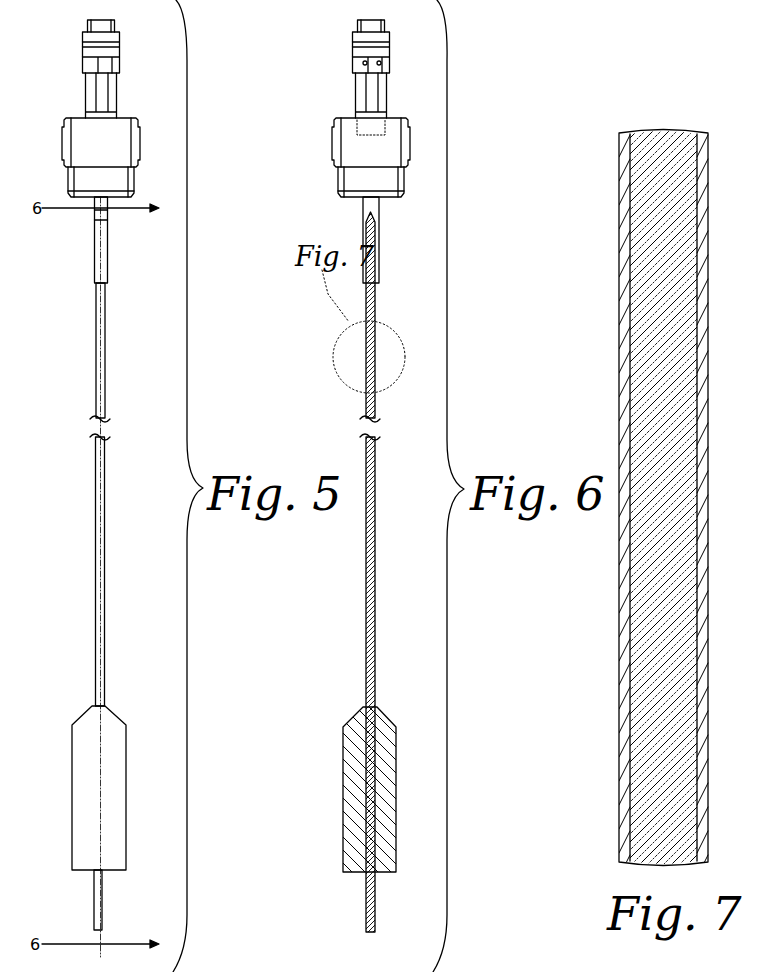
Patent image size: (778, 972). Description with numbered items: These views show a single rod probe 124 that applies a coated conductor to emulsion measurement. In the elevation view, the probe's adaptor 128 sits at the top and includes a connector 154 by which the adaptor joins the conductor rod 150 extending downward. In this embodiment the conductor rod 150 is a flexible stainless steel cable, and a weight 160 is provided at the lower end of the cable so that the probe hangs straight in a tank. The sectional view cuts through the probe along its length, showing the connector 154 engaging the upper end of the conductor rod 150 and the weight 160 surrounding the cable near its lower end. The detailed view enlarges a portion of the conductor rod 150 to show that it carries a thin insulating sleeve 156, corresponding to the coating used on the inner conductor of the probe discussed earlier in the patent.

In FIG. 5, the single rod probe 124 is at (120, 258).
In FIG. 6, the single rod probe 124 is at (358, 600).
In FIG. 5, the adaptor 128 is at (141, 152).
In FIG. 7, the conductor rod 150 is at (670, 130).
In FIG. 6, the connector 154 is at (378, 208).
In FIG. 7, the thin insulating sleeve 156 is at (619, 195).
In FIG. 6, the weight 160 is at (350, 830).